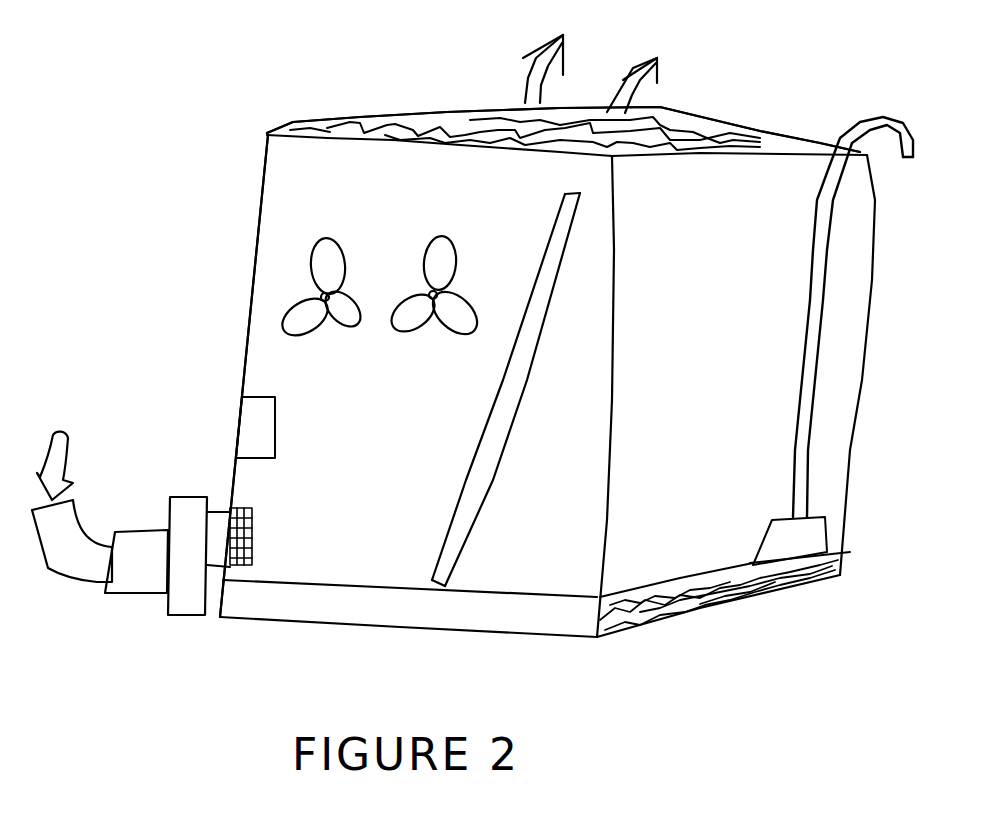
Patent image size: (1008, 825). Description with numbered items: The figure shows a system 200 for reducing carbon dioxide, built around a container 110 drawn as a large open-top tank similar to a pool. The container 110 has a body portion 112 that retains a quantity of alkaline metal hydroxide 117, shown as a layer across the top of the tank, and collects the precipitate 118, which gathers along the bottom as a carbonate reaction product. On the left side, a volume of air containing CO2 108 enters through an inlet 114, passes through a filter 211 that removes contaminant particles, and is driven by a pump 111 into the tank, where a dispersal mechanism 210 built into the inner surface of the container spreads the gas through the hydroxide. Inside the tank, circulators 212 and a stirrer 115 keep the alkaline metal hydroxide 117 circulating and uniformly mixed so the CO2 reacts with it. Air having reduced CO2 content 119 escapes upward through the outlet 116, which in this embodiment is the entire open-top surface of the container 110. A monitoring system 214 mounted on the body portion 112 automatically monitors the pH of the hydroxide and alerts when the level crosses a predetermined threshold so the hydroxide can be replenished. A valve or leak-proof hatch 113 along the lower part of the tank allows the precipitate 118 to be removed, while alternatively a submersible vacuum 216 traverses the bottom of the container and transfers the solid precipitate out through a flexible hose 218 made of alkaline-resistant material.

The system for reducing CO2 200 is at (802, 100).
The container 110 is at (755, 415).
The body portion 112 is at (247, 323).
The valve or leak-proof hatch 113 is at (402, 616).
The inlet 114 is at (75, 507).
The stirrer 115 is at (553, 233).
The outlet 116 is at (284, 128).
The alkaline metal hydroxide 117 is at (460, 133).
The precipitate 118 is at (707, 588).
The volume of air having reduced CO2 content 119 is at (622, 88).
The air containing CO2 108 is at (63, 447).
The dispersal mechanism 210 is at (252, 520).
The filter 211 is at (152, 574).
The pump 111 is at (198, 556).
The circulator 212 is at (380, 284).
The monitoring system 214 is at (268, 436).
The submersible vacuum 216 is at (805, 550).
The flexible hose 218 is at (815, 267).